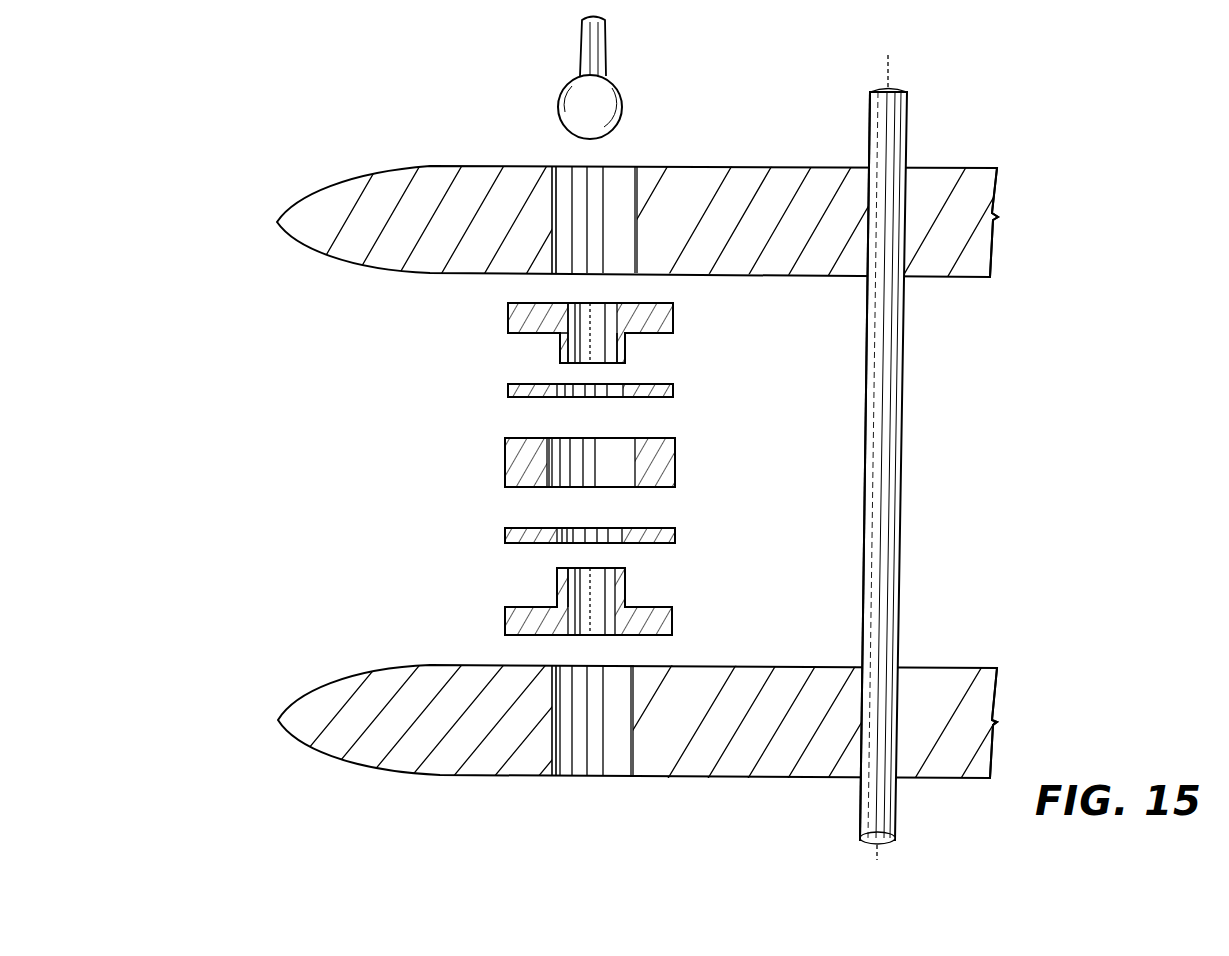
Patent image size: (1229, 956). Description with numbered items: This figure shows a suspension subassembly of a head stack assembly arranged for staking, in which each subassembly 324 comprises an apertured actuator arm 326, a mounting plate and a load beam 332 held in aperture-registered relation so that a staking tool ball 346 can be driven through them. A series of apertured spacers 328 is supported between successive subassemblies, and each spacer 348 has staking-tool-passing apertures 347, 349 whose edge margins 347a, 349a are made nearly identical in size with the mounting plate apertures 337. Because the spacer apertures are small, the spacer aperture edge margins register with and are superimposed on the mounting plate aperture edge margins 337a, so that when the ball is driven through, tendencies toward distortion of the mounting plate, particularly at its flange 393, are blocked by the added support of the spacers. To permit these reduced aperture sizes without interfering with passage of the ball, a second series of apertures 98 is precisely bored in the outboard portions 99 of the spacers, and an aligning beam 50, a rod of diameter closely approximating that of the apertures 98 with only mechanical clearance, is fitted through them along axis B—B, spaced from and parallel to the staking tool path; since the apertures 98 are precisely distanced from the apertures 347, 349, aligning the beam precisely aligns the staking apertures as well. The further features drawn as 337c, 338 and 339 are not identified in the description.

The aligning beam 50 is at (900, 453).
The second series of apertures 98 is at (878, 155).
The outboard portions 99 is at (950, 178).
The head stack assembly subassembly 324 is at (418, 384).
The actuator arm 326 is at (675, 471).
The apertured spacer 328 is at (608, 52).
The load beam 332 is at (675, 391).
The mounting plate aperture 337 is at (593, 317).
The mounting plate aperture edge margin 337a is at (675, 635).
The upper bushing 337c is at (633, 300).
The bushing stem wall 338 is at (560, 366).
The bushing stem 339 is at (606, 348).
The staking tool ball 346 is at (600, 110).
The spacer aperture 347 is at (572, 178).
The spacer aperture edge margin 347a is at (612, 665).
The spacer 348 is at (357, 193).
The spacer aperture 349 is at (616, 200).
The spacer aperture edge margin 349a is at (563, 772).
The flange 393 is at (507, 320).